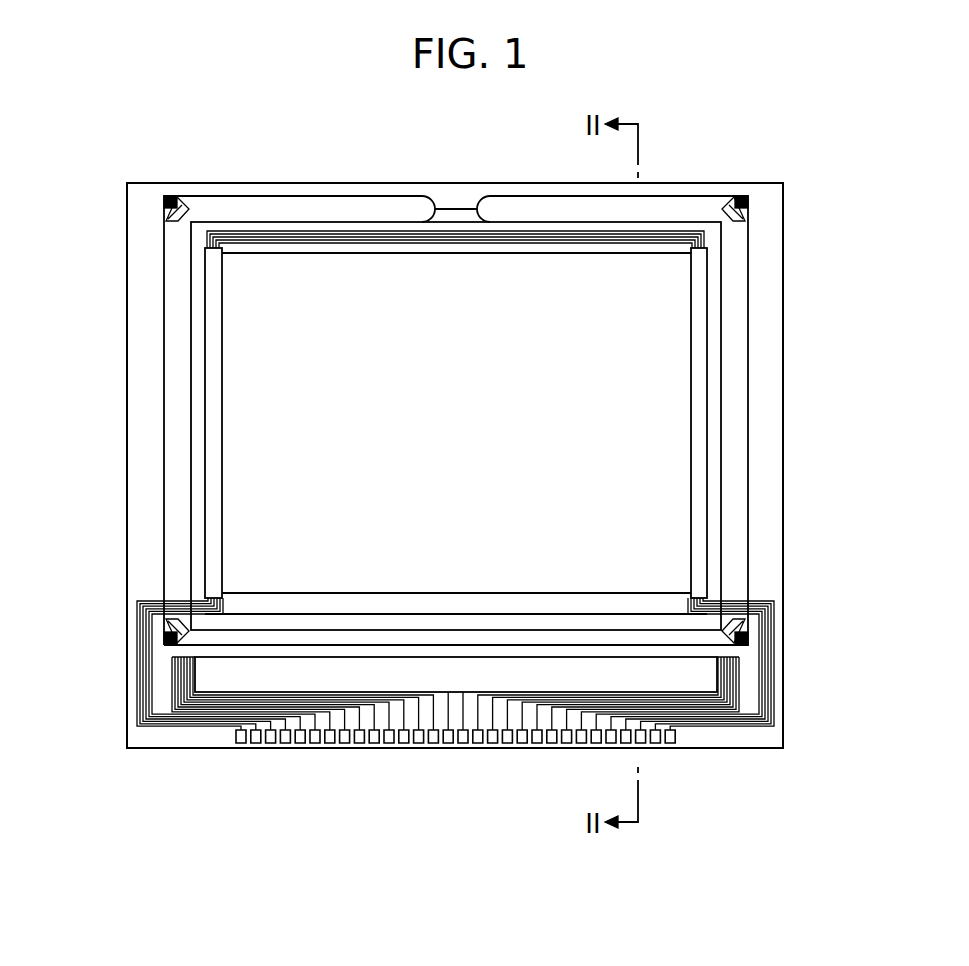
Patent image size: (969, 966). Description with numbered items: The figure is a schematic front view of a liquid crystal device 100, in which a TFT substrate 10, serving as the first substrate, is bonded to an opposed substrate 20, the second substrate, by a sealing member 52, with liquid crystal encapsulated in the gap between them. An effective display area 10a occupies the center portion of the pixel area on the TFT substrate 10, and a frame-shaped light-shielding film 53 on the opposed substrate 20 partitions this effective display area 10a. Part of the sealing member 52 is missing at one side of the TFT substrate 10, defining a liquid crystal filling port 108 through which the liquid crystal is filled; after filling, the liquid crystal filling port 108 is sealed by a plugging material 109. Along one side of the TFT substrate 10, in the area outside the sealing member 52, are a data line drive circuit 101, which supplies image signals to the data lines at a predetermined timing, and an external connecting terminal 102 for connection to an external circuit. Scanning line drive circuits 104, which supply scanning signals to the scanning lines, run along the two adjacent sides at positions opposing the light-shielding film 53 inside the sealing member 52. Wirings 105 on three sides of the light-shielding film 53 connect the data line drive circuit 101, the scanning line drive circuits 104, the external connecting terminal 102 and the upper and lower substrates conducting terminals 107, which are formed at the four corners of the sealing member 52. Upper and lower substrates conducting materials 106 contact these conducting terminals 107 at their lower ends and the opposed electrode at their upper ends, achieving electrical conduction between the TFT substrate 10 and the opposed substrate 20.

The liquid crystal device 100 is at (719, 100).
The TFT substrate 10 is at (267, 190).
The effective display area 10a is at (263, 377).
The opposed substrate 20 is at (497, 192).
The sealing member 52 is at (738, 354).
The light-shielding film 53 is at (258, 605).
The data line drive circuit 101 is at (218, 682).
The external connecting terminal 102 is at (418, 738).
The scanning line drive circuit 104 is at (215, 318).
The wirings 105 is at (362, 240).
The upper and lower substrates conducting material 106 is at (164, 201).
The upper and lower substrates conducting terminal 107 is at (176, 222).
The liquid crystal filling port 108 is at (437, 207).
The plugging material 109 is at (547, 192).